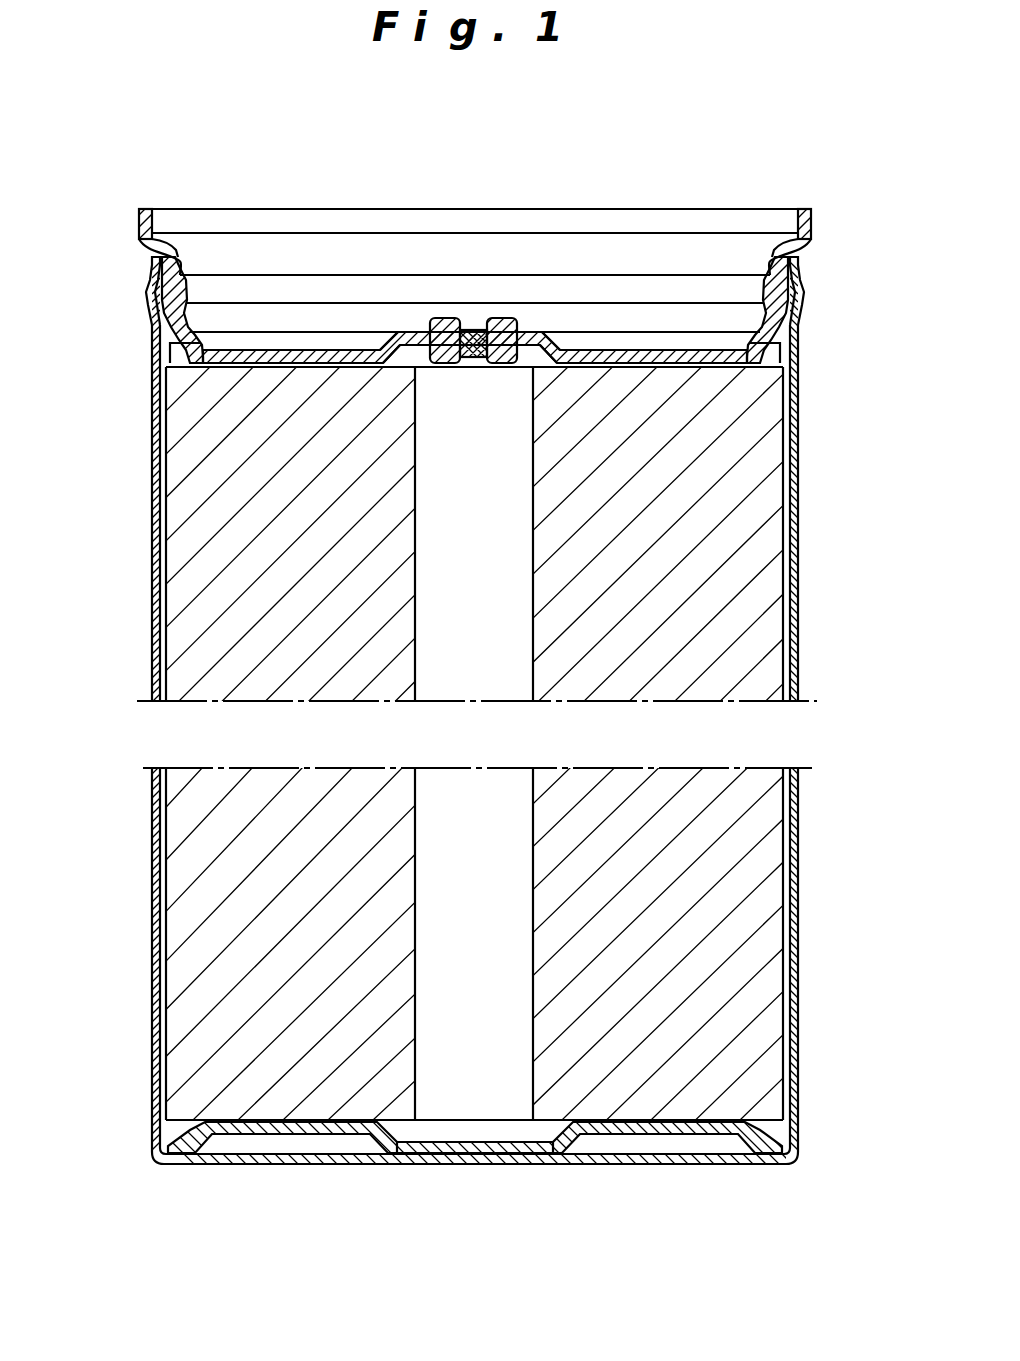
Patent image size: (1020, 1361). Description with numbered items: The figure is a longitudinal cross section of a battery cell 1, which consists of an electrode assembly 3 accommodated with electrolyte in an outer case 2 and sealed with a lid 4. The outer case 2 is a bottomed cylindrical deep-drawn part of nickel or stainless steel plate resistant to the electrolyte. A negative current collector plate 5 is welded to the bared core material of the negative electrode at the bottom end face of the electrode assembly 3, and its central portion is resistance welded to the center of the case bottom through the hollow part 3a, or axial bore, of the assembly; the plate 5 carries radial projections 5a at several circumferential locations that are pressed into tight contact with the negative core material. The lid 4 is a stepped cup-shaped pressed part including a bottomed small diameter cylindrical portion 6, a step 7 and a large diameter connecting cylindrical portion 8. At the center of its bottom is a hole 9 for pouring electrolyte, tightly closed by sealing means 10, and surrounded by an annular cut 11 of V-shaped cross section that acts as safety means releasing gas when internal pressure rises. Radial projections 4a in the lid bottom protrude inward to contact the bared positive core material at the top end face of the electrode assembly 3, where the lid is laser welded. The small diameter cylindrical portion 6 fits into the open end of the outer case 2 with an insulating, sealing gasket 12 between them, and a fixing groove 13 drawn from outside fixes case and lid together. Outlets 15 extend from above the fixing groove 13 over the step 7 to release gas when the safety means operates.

The battery cell 1 is at (142, 522).
The outer case 2 is at (152, 622).
The electrode assembly 3 is at (168, 851).
The hollow part 3a is at (489, 538).
The lid 4 is at (340, 218).
The radial projections 4a is at (627, 357).
The negative current collector plate 5 is at (428, 1148).
The radial projections 5a is at (302, 1130).
The bottomed small diameter cylindrical portion 6 is at (187, 333).
The step 7 is at (150, 239).
The large diameter connecting cylindrical portion 8 is at (138, 221).
The hole 9 is at (487, 364).
The sealing means 10 is at (443, 319).
The annular cut 11 is at (411, 331).
The gasket 12 is at (151, 332).
The fixing groove 13 is at (150, 291).
The outlets 15 is at (152, 249).